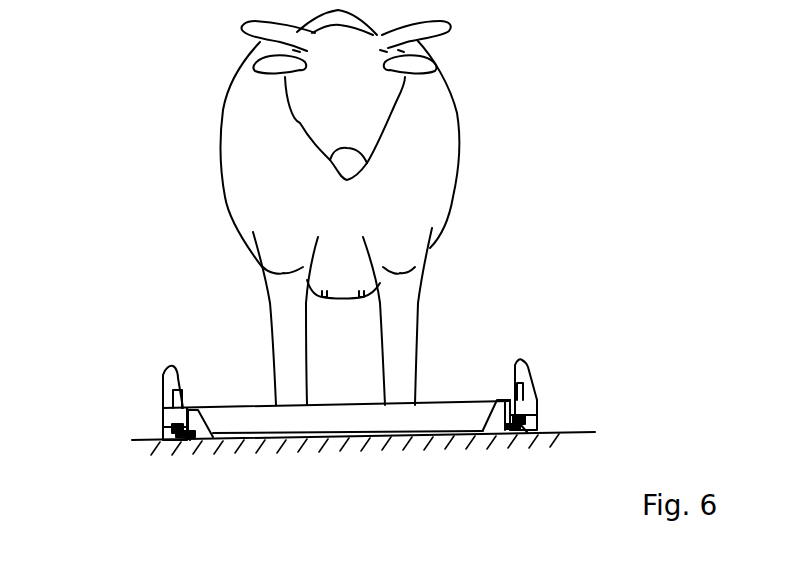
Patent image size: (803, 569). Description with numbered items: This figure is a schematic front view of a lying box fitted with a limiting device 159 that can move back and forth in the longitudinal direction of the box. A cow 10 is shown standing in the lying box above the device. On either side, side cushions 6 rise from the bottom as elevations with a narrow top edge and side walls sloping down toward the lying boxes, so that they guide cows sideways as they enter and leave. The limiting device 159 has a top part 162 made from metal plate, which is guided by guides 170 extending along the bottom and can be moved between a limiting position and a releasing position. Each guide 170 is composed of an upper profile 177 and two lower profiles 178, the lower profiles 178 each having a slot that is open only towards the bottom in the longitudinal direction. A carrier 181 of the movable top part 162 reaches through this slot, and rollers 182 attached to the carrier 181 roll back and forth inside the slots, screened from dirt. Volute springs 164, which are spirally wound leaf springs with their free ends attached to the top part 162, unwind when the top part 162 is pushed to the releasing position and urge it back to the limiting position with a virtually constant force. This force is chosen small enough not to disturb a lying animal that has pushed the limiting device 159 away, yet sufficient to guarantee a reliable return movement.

The cow 10 is at (462, 118).
The limiting device 159 is at (475, 360).
The top part 162 is at (422, 420).
The side cushion 6 is at (170, 374).
The volute spring 164 is at (180, 393).
The guide 170 is at (163, 417).
The upper profile 177 is at (160, 417).
The lower profile 178 is at (163, 423).
The carrier 181 is at (187, 437).
The roller 182 is at (175, 428).